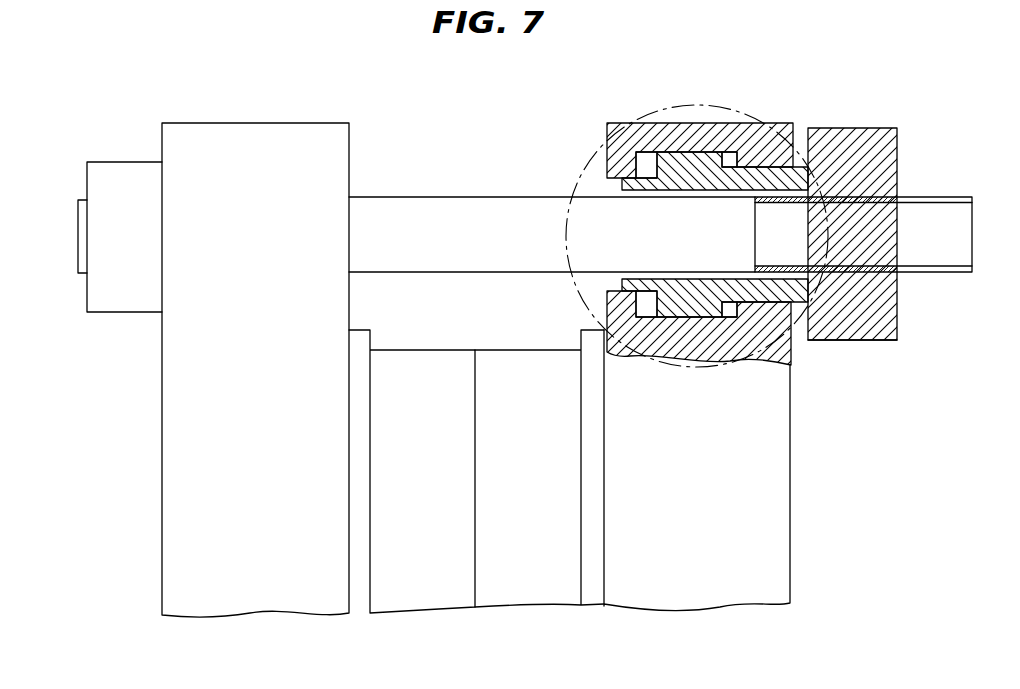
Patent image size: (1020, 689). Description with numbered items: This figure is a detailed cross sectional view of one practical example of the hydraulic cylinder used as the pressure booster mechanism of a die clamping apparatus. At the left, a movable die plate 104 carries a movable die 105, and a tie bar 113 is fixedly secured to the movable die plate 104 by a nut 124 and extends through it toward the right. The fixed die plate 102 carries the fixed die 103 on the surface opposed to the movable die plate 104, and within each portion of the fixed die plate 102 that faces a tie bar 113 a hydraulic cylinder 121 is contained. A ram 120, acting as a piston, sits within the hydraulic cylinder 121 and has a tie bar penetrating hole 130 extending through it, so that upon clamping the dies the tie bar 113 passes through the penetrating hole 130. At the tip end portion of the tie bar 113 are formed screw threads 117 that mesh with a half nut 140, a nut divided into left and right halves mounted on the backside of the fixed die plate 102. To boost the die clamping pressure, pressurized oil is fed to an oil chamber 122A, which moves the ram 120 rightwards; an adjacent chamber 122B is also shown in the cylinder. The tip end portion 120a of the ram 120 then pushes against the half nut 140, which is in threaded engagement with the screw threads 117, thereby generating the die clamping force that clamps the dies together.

The fixed die plate 102 is at (760, 495).
The fixed die 103 is at (543, 570).
The movable die plate 104 is at (185, 426).
The movable die 105 is at (412, 570).
The tie bar 113 is at (395, 217).
The screw threads 117 is at (944, 194).
The ram 120 is at (792, 365).
The tip end portion 120a is at (850, 340).
The hydraulic cylinder 121 is at (747, 120).
The oil chamber 122A is at (641, 165).
The second seal ring 122B is at (728, 165).
The nut 124 is at (114, 155).
The tie bar penetrating hole 130 is at (617, 196).
The half nut 140 is at (888, 122).